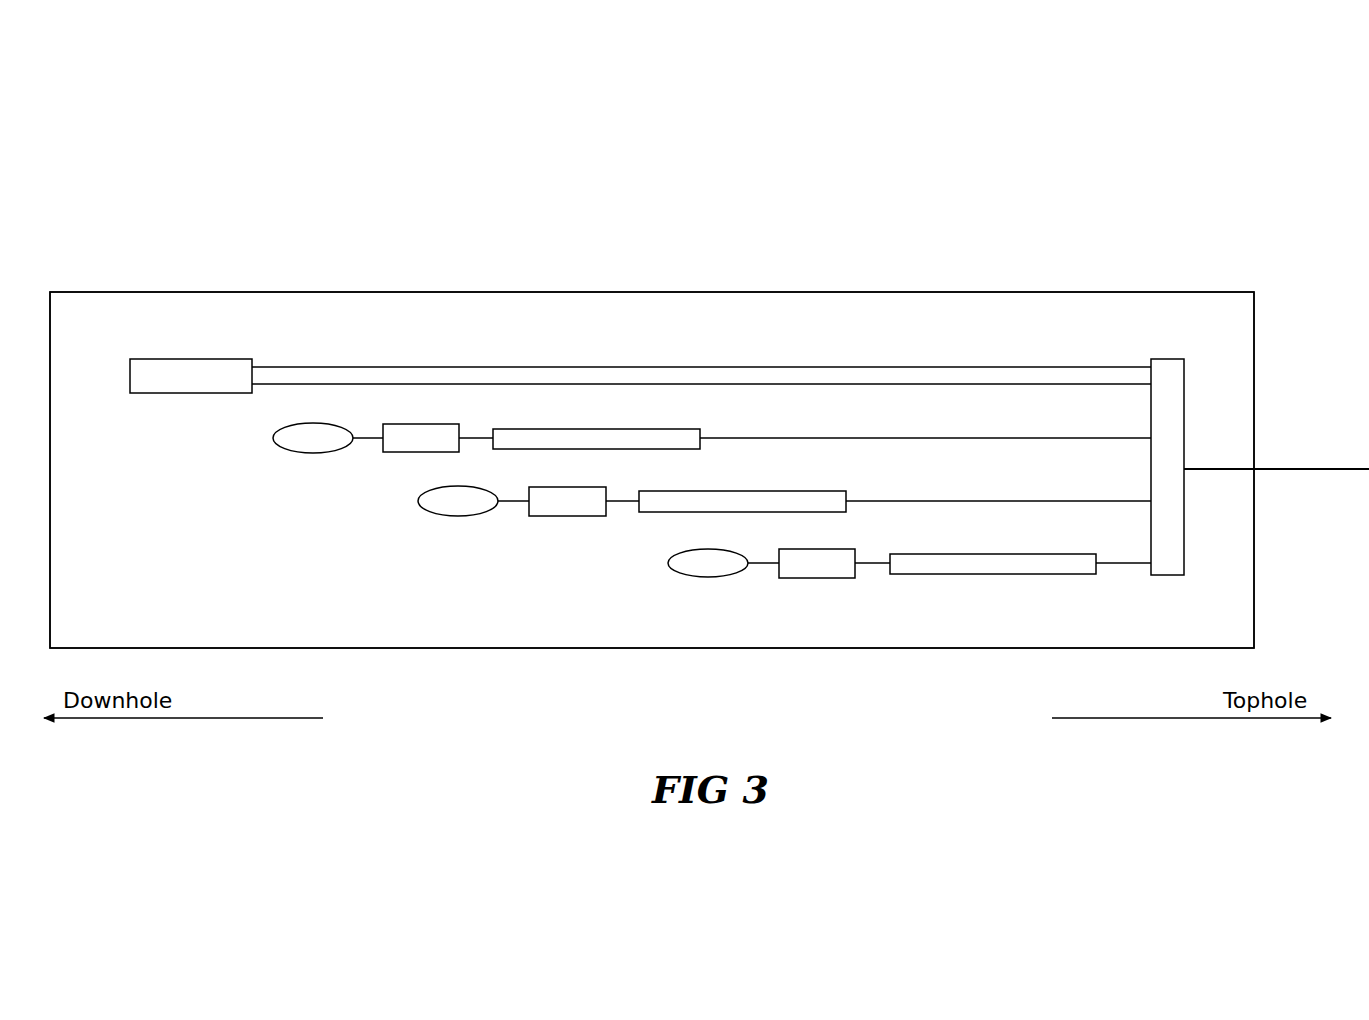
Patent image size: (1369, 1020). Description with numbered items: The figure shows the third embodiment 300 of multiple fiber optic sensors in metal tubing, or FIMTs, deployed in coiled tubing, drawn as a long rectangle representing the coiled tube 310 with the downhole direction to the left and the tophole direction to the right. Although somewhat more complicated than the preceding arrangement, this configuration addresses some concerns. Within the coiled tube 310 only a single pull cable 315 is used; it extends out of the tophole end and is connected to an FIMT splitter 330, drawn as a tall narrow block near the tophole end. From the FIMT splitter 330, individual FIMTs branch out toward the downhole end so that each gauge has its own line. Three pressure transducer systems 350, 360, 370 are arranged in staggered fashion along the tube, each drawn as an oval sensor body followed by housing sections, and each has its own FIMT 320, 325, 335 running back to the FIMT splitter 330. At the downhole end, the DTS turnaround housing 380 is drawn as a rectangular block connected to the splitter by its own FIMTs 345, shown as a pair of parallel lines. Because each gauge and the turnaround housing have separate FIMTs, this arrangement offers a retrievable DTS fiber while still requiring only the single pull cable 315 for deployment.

The third embodiment 300 is at (222, 158).
The coiled tube 310 is at (484, 292).
The pull cable 315 is at (1287, 468).
The FIMT 320 is at (1113, 565).
The FIMT 325 is at (975, 500).
The FIMT splitter 330 is at (1168, 359).
The FIMT 335 is at (918, 438).
The FIMTs 345 is at (661, 366).
The pressure transducer system 350 is at (647, 576).
The pressure transducer system 360 is at (402, 531).
The pressure transducer system 370 is at (253, 468).
The DTS turnaround housing 380 is at (203, 393).